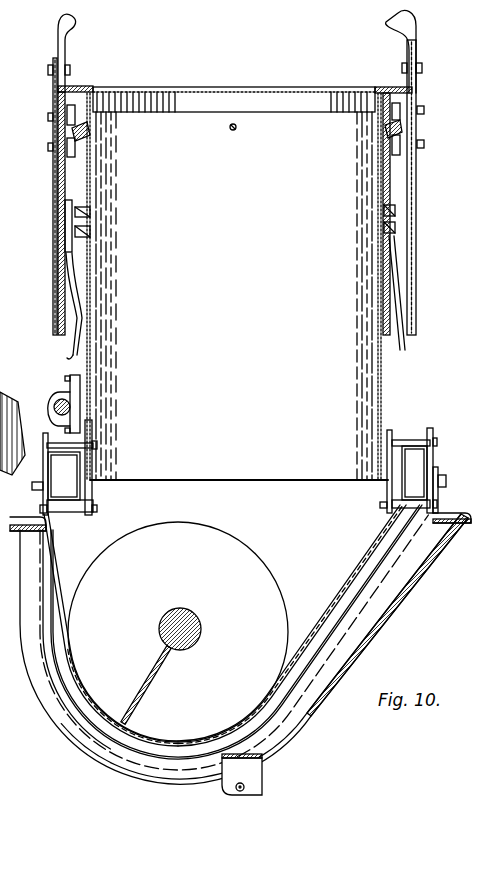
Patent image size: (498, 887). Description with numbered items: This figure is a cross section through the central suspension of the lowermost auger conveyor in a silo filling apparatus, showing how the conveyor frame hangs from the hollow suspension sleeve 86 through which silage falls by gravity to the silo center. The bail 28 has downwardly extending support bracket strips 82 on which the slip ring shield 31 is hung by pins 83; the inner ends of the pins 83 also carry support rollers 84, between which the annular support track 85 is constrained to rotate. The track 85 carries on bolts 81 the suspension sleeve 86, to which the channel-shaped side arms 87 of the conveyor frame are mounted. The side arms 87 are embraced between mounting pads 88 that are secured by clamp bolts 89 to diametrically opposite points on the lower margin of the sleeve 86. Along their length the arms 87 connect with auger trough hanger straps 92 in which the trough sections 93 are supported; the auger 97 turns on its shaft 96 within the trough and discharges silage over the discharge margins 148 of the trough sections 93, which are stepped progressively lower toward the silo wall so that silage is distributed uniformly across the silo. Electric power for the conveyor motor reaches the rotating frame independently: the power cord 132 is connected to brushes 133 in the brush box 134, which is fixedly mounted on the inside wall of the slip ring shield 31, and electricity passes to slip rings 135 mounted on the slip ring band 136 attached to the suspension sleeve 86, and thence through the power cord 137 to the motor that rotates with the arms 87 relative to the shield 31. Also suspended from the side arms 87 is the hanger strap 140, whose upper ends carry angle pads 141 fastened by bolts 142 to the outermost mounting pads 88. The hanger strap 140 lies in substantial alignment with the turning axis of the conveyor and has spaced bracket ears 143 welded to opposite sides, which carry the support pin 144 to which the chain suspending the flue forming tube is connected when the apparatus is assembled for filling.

The bail 28 is at (403, 27).
The slip ring shield 31 is at (413, 253).
The bolts 81 is at (90, 132).
The support bracket strips 82 is at (403, 127).
The pins 83 is at (425, 110).
The support rollers 84 is at (72, 165).
The annular support track 85 is at (88, 142).
The suspension sleeve 86 is at (97, 310).
The channel-shaped side arms 87 is at (77, 466).
The mounting pads 88 is at (91, 492).
The clamp bolts 89 is at (72, 447).
The auger trough hanger straps 92 is at (382, 550).
The trough sections 93 is at (343, 600).
The shaft 96 is at (201, 642).
The auger 97 is at (249, 562).
The power cord 132 is at (72, 348).
The brushes 133 is at (86, 210).
The brush box 134 is at (67, 228).
The slip rings 135 is at (88, 228).
The slip ring band 136 is at (381, 228).
The power cord 137 is at (408, 345).
The hanger strap 140 is at (382, 608).
The angle pads 141 is at (443, 522).
The bolts 142 is at (37, 485).
The bracket ears 143 is at (257, 770).
The support pin 144 is at (253, 787).
The discharge margins 148 is at (71, 655).